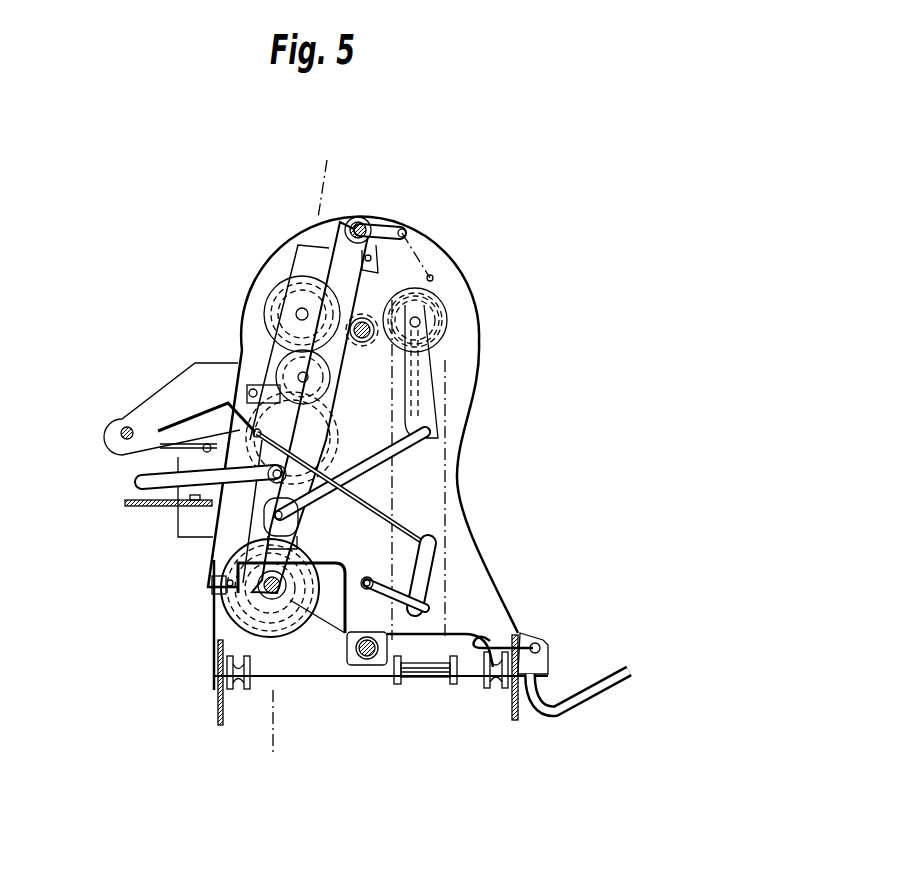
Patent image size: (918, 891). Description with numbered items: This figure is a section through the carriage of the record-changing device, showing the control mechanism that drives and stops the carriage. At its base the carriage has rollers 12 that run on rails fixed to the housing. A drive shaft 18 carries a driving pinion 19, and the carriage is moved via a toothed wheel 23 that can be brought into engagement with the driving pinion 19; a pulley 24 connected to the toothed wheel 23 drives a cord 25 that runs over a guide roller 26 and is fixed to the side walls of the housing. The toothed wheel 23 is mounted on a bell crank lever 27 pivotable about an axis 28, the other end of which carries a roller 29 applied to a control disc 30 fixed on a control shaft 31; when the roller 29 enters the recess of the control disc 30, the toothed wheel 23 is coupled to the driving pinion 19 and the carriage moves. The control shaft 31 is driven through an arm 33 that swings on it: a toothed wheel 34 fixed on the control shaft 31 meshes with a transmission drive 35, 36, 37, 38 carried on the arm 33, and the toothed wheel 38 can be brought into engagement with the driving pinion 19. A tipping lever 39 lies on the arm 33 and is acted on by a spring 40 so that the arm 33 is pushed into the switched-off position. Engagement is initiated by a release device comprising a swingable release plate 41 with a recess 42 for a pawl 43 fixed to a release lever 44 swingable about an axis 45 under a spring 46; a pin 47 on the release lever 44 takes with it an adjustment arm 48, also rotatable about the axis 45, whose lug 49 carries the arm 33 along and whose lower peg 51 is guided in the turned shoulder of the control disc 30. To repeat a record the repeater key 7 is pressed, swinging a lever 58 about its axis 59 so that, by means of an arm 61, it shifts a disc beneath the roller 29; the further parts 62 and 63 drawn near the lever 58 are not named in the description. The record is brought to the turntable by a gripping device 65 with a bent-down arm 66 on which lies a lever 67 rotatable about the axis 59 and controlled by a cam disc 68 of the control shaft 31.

The repeater key 7 is at (170, 388).
The rollers 12 is at (230, 689).
The drive shaft 18 is at (412, 380).
The driving pinion 19 is at (370, 312).
The toothed wheel 23 is at (443, 302).
The pulley 24 is at (433, 320).
The cord 25 is at (442, 452).
The guide roller 26 is at (446, 684).
The bell crank lever 27 is at (422, 360).
The axis 28 is at (430, 432).
The roller 29 is at (303, 537).
The control disc 30 is at (282, 637).
The control shaft 31 is at (278, 622).
The arm 33 is at (312, 253).
The toothed wheel 34 is at (232, 610).
The transmission drive element 35 is at (300, 522).
The transmission drive element 36 is at (340, 440).
The transmission drive element 37 is at (332, 377).
The toothed wheel 38 is at (265, 300).
The tipping lever 39 is at (382, 237).
The spring 40 is at (418, 250).
The release plate 41 is at (150, 503).
The recess 42 is at (140, 510).
The pawl 43 is at (140, 482).
The release lever 44 is at (248, 508).
The axis 45 is at (358, 222).
The spring 46 is at (333, 413).
The pin 47 is at (245, 398).
The adjustment arm 48 is at (222, 556).
The lug 49 is at (257, 433).
The peg 51 is at (232, 585).
The lever 58 is at (433, 543).
The axis 59 is at (368, 660).
The arm 61 is at (332, 627).
The rocker 62 is at (371, 578).
The lever 63 is at (428, 580).
The gripping device 65 is at (577, 707).
The bent-down arm 66 is at (508, 632).
The lever 67 is at (428, 630).
The cam disc 68 is at (238, 623).